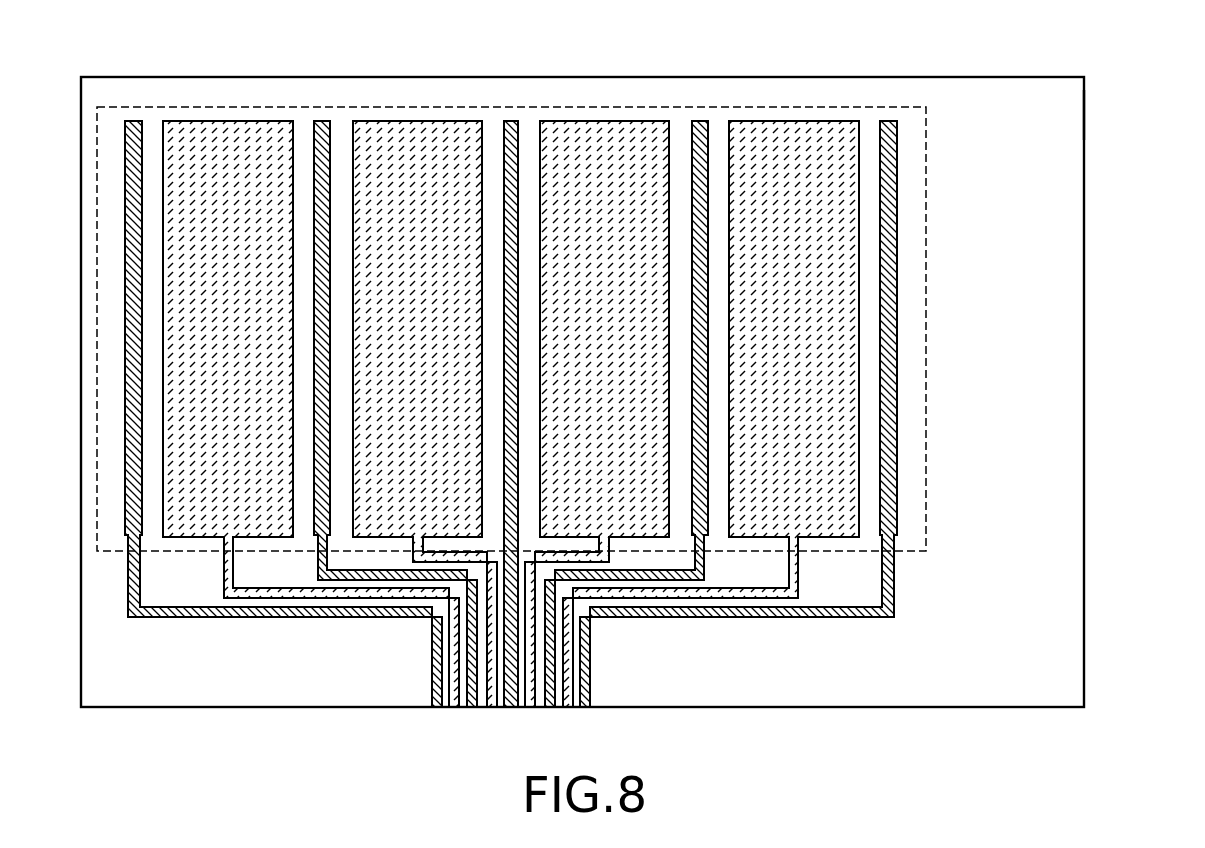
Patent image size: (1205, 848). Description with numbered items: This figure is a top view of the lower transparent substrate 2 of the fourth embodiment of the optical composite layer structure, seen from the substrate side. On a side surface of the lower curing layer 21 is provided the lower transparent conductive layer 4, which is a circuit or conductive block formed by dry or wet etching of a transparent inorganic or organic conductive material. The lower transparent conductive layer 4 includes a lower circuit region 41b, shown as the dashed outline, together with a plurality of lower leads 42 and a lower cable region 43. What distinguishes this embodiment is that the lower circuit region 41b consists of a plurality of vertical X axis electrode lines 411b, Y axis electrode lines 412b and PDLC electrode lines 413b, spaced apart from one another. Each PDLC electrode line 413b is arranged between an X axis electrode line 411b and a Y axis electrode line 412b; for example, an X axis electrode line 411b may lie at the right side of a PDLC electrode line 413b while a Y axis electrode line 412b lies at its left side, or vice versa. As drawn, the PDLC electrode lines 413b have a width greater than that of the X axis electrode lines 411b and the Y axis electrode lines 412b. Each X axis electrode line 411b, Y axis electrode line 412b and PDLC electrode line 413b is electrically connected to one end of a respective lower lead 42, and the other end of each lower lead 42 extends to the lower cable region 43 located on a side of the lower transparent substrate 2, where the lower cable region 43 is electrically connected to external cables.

The lower transparent substrate 2 is at (1032, 78).
The lower curing layer 21 is at (1068, 114).
The lower transparent conductive layer 4 is at (486, 362).
The lower circuit region 41b is at (810, 107).
The X axis electrode line 411b is at (132, 140).
The Y axis electrode line 412b is at (322, 140).
The PDLC electrode line 413b is at (222, 142).
The lower lead 42 is at (819, 621).
The lower cable region 43 is at (430, 655).